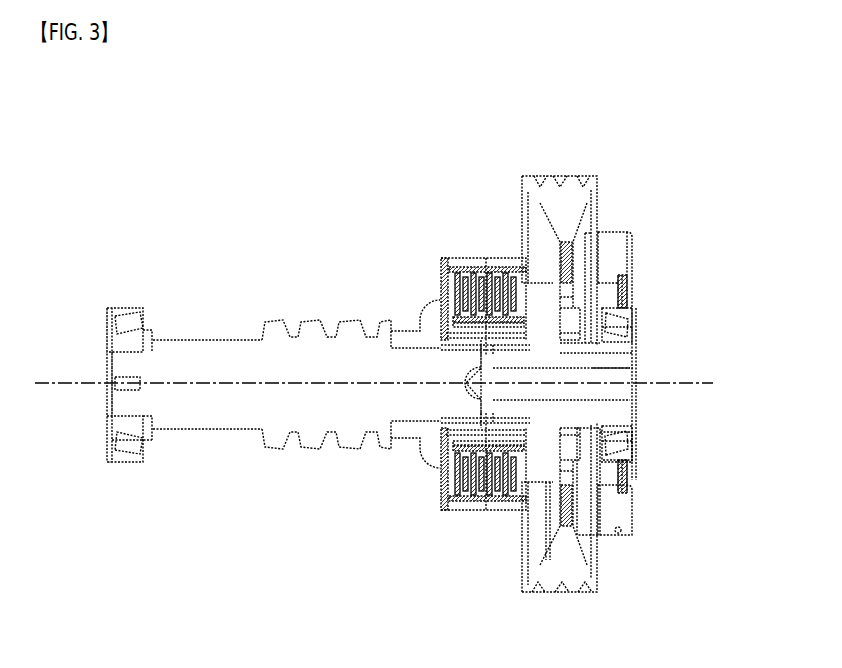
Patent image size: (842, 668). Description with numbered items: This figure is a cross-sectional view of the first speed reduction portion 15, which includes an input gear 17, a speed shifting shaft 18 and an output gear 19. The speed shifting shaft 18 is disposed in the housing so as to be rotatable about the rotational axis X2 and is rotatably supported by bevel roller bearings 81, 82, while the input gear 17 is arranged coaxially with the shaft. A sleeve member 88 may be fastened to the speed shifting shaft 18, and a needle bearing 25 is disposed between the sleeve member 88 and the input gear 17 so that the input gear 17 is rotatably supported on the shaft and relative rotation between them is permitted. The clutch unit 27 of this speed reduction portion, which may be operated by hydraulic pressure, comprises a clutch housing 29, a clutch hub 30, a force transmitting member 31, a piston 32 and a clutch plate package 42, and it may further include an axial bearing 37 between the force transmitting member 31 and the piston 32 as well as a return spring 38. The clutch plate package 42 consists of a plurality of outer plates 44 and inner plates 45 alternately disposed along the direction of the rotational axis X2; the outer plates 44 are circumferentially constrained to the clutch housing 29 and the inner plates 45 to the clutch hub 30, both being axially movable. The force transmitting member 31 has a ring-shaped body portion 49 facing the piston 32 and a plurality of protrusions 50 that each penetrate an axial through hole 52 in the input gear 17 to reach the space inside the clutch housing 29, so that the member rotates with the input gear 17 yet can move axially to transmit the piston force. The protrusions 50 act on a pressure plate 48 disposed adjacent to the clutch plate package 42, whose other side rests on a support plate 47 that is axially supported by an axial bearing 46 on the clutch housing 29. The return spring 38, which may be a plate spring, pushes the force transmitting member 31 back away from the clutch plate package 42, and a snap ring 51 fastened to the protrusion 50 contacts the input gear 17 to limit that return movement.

The first speed reduction portion 15 is at (222, 231).
The input gear 17 is at (558, 175).
The speed shifting shaft 18 is at (207, 350).
The output gear 19 is at (309, 322).
The needle bearing 25 is at (607, 428).
The clutch unit 27 is at (462, 250).
The clutch housing 29 is at (440, 262).
The clutch hub 30 is at (438, 318).
The force transmitting member 31 is at (547, 272).
The piston 32 is at (613, 254).
The axial bearing 37 is at (600, 245).
The return spring 38 is at (578, 250).
The clutch plate package 42 is at (487, 270).
The outer plate 44 is at (480, 497).
The inner plate 45 is at (487, 497).
The axial bearing 46 is at (443, 473).
The support plate 47 is at (462, 497).
The pressure plate 48 is at (523, 497).
The body portion 49 is at (578, 540).
The protrusion 50 is at (556, 480).
The snap ring 51 is at (520, 468).
The axial through hole 52 is at (549, 478).
The bevel roller bearing 81 is at (620, 323).
The bevel roller bearing 82 is at (123, 305).
The sleeve member 88 is at (588, 345).
The rotational axis X2 is at (713, 386).